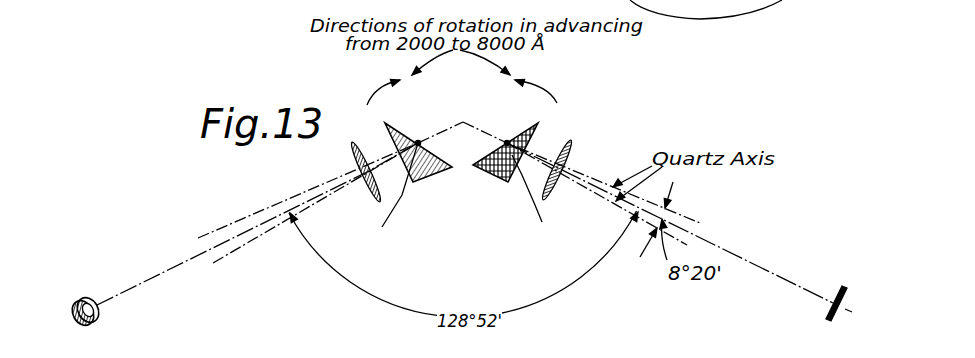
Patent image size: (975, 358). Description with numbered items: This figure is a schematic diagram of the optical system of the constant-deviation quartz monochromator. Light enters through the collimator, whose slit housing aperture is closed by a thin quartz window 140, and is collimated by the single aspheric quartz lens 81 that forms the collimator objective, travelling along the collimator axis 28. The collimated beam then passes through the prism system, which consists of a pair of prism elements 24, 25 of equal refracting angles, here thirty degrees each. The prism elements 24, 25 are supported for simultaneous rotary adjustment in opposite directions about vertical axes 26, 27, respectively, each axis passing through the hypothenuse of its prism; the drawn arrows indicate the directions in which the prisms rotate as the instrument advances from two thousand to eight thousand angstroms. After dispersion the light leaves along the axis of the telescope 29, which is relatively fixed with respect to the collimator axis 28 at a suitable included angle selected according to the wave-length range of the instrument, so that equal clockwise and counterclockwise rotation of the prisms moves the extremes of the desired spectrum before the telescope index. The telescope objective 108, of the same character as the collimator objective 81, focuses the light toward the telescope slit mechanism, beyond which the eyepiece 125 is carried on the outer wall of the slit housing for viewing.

The prism element 24 is at (502, 177).
The prism element 25 is at (440, 176).
The vertical axis of rotation 26 is at (507, 143).
The vertical axis of rotation 27 is at (418, 143).
The collimator axis 28 is at (732, 253).
The telescope axis 29 is at (200, 253).
The quartz lens 81 is at (569, 156).
The telescope objective 108 is at (354, 150).
The eyepiece 125 is at (87, 297).
The quartz window 140 is at (830, 302).